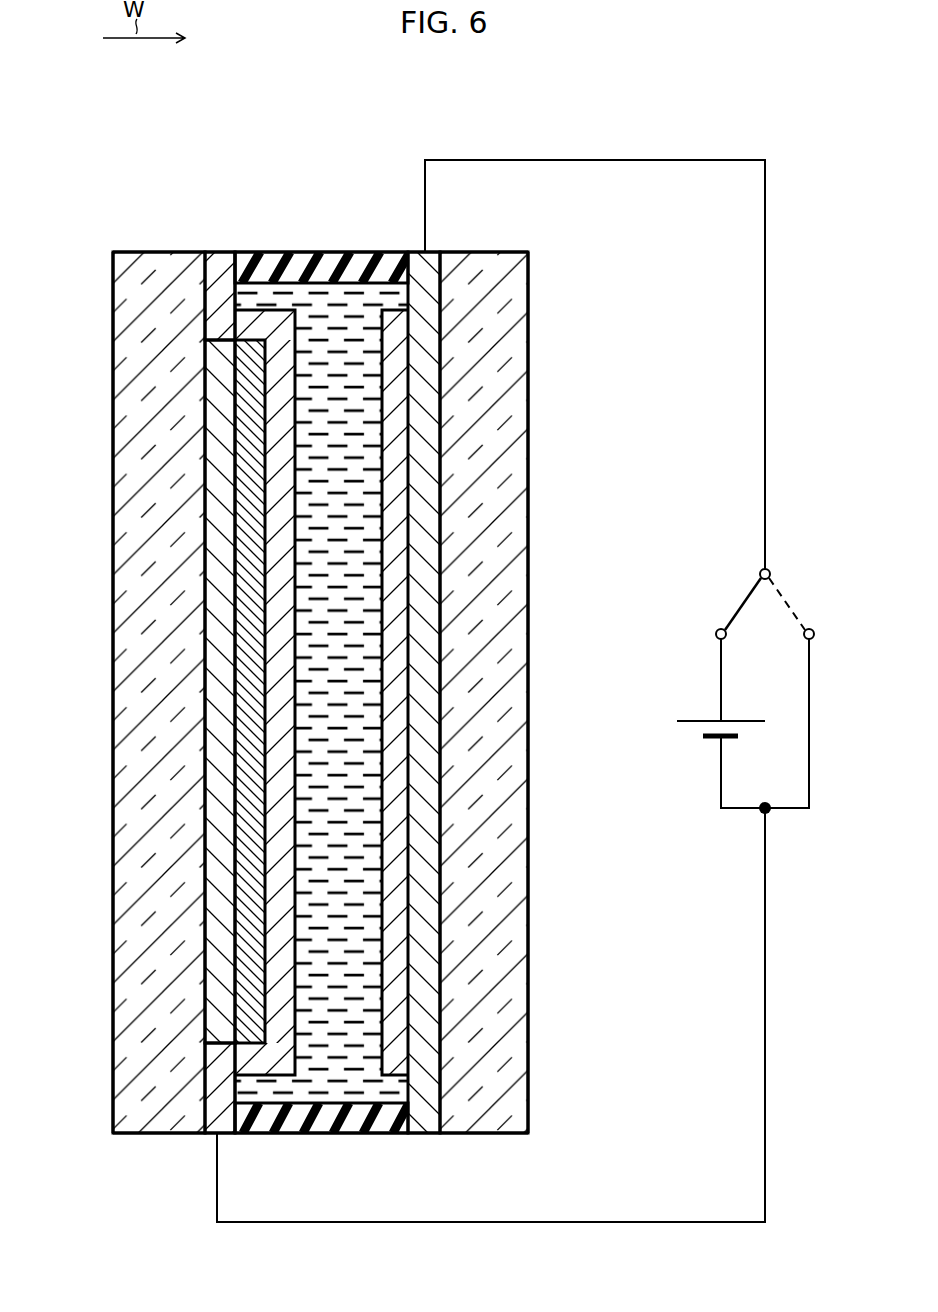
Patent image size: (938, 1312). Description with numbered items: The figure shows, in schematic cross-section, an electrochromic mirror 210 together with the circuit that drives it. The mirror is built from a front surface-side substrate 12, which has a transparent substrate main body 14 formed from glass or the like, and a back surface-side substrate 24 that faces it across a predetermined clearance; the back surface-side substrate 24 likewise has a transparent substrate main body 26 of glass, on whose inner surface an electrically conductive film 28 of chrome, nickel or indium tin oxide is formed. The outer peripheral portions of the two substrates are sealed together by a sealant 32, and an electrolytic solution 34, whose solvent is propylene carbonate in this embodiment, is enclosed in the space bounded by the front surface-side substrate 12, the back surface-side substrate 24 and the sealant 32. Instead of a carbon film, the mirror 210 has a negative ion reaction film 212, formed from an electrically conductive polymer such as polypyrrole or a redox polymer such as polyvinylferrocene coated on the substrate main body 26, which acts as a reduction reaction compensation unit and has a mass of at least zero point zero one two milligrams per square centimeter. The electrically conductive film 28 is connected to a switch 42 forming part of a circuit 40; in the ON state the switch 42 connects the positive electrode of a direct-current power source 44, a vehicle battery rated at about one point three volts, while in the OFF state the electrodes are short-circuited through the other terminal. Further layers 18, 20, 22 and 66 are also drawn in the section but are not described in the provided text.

The front surface-side substrate 12 is at (128, 248).
The substrate main body 14 is at (126, 319).
The transparent conductive electrode layer 18 is at (222, 248).
The electrochromic electrode layer 20 is at (242, 936).
The electrode terminal portion 22 is at (218, 1112).
The back surface-side substrate 24 is at (556, 393).
The substrate main body 26 is at (506, 488).
The electrically conductive film 28 is at (430, 289).
The sealant 32 is at (338, 268).
The electrolytic solution 34 is at (335, 1084).
The circuit 40 is at (813, 554).
The switch 42 is at (728, 607).
The direct-current power source 44 is at (690, 734).
The ion conductive layer 66 is at (211, 737).
The electrochromic mirror 210 is at (294, 201).
The negative ion reaction film 212 is at (398, 629).